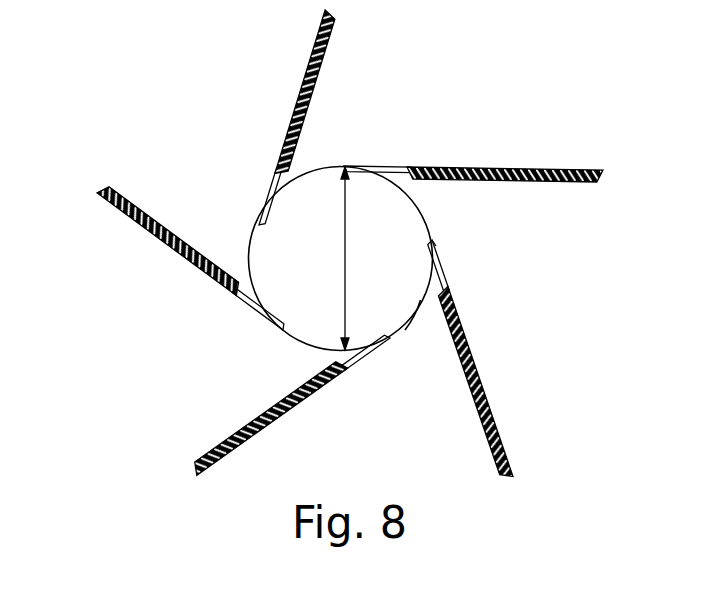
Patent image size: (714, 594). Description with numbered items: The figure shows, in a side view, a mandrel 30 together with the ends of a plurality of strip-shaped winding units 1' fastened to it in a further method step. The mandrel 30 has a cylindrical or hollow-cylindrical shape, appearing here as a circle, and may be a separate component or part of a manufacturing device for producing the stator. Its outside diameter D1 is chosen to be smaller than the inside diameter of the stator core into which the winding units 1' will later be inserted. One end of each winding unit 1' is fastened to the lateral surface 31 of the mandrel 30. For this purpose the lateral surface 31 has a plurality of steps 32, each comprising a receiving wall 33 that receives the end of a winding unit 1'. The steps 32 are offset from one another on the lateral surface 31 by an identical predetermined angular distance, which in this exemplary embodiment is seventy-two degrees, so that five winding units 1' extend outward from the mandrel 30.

The strip-shaped winding unit 1' is at (350, 245).
The mandrel 30 is at (282, 293).
The lateral surface 31 is at (424, 310).
The step 32 is at (352, 155).
The receiving wall 33 is at (435, 240).
The outside diameter D1 is at (343, 258).